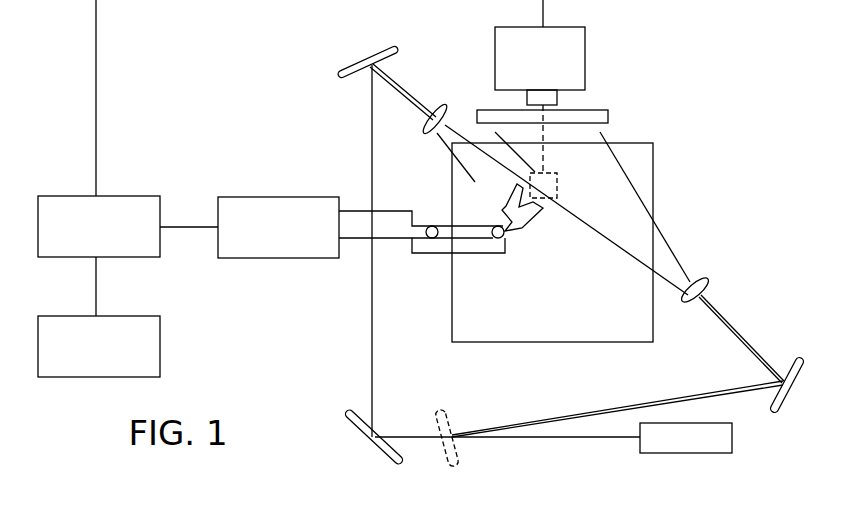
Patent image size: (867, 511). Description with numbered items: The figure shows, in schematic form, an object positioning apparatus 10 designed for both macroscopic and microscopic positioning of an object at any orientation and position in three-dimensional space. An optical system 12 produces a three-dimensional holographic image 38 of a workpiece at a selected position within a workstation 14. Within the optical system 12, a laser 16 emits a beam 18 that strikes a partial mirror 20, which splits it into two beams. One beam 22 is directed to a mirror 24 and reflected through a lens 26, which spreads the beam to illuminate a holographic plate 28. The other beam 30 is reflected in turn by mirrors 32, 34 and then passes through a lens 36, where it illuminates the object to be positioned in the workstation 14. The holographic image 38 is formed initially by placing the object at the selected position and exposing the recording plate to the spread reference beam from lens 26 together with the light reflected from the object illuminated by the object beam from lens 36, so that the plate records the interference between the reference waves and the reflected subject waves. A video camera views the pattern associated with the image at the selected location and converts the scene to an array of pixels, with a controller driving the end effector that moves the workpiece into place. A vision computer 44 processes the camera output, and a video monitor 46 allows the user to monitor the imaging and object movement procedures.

The object positioning apparatus 10 is at (731, 146).
The optical system 12 is at (427, 80).
The workstation 14 is at (572, 323).
The laser 16 is at (732, 443).
The beam 18 is at (568, 439).
The partial mirror 20 is at (453, 416).
The beam 22 is at (630, 404).
The mirror 24 is at (802, 366).
The lens 26 is at (708, 283).
The holographic plate 28 is at (608, 117).
The beam 30 is at (403, 434).
The mirror 32 is at (387, 463).
The mirror 34 is at (395, 50).
The lens 36 is at (427, 125).
The holographic image 38 is at (558, 172).
The vision computer 44 is at (145, 258).
The video monitor 46 is at (157, 350).